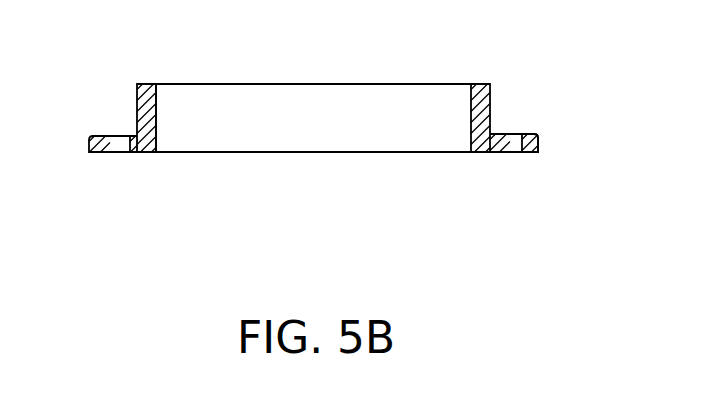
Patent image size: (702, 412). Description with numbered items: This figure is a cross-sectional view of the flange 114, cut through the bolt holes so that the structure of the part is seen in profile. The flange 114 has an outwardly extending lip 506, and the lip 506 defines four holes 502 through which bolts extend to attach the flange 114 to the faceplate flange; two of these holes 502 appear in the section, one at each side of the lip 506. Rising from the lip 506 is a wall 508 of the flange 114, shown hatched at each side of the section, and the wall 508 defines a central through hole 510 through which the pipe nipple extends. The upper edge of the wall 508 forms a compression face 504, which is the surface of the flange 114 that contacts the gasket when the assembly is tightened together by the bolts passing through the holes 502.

The flange 114 is at (137, 103).
The holes 502 is at (118, 142).
The compression face 504 is at (481, 84).
The lip 506 is at (528, 153).
The wall 508 is at (156, 102).
The through hole 510 is at (313, 118).